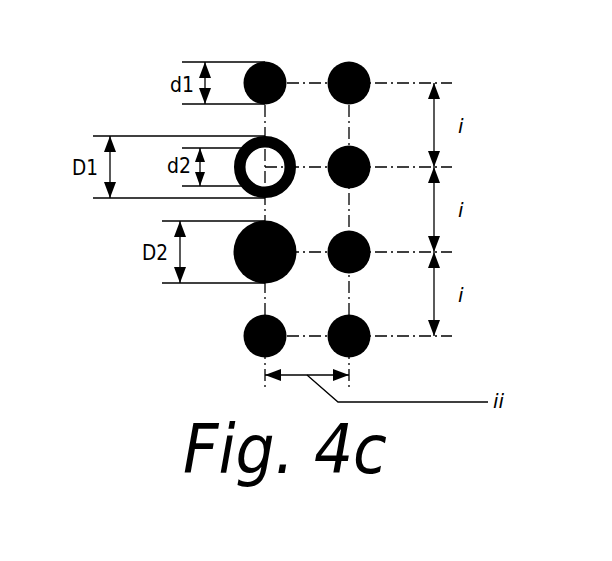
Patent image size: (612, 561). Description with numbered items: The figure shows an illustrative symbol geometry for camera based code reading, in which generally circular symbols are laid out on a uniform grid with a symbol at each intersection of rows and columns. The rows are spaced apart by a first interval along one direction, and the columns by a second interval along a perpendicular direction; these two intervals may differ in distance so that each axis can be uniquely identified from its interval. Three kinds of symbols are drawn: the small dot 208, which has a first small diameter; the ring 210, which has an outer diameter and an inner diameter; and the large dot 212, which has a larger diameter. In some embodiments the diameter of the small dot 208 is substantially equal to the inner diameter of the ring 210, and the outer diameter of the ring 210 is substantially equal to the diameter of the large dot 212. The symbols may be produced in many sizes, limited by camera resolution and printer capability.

The small dot 208 is at (193, 50).
The ring 210 is at (142, 108).
The large dot 212 is at (213, 312).